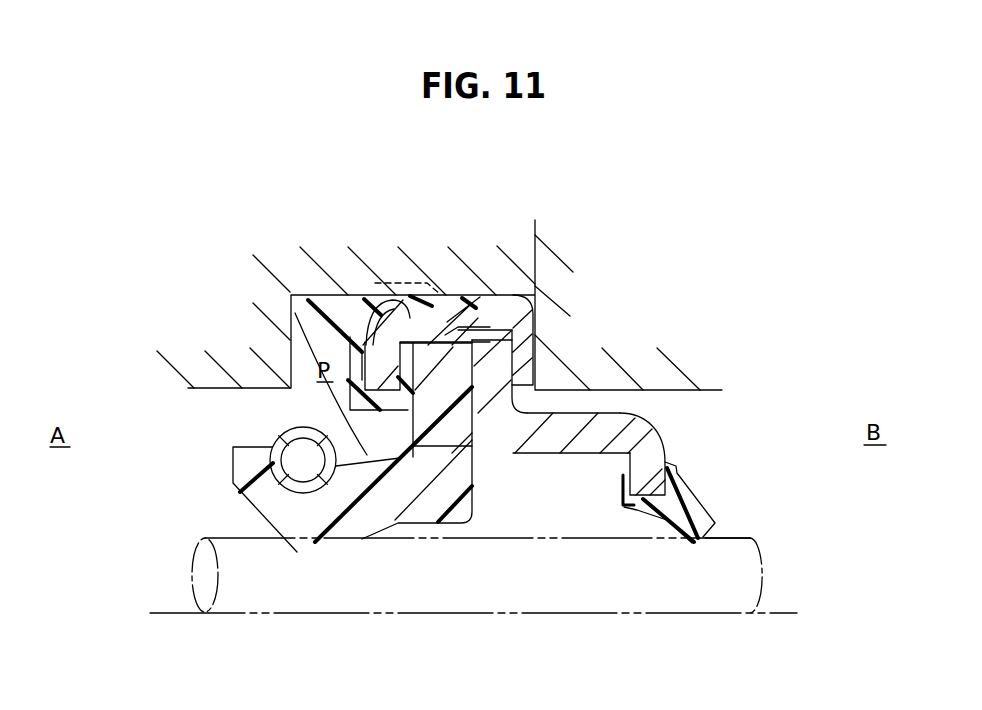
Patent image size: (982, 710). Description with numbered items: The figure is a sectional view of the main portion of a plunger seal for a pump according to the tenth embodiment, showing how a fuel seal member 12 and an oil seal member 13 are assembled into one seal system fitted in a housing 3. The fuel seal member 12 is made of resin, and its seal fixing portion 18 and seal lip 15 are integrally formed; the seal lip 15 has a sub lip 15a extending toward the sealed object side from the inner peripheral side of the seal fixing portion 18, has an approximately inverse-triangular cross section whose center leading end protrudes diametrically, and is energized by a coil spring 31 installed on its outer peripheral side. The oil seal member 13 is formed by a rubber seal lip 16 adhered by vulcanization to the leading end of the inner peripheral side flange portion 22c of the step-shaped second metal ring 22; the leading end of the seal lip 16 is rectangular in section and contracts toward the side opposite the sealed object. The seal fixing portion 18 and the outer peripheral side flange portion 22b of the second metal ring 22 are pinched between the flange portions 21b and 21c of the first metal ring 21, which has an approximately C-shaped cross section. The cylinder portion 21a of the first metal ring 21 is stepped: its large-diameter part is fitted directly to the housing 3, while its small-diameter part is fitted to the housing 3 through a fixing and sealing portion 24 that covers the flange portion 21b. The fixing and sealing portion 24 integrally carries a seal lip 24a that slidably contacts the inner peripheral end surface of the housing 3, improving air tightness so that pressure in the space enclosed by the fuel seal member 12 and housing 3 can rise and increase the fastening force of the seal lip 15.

The housing 3 is at (502, 267).
The fuel seal member 12 is at (364, 452).
The oil seal member 13 is at (684, 476).
The seal lip 15 is at (300, 552).
The sub lip 15a is at (358, 530).
The seal lip 16 is at (700, 542).
The seal fixing portion 18 is at (422, 343).
The first metal ring 21 is at (475, 298).
The cylinder portion 21a is at (449, 294).
The flange portion 21b is at (376, 362).
The flange portion 21c is at (524, 346).
The second metal ring 22 is at (558, 437).
The outer peripheral side flange portion 22b is at (497, 372).
The inner peripheral side flange portion 22c is at (642, 472).
The fixing and sealing portion 24 is at (372, 285).
The seal lip 24a is at (328, 297).
The coil spring 31 is at (280, 435).